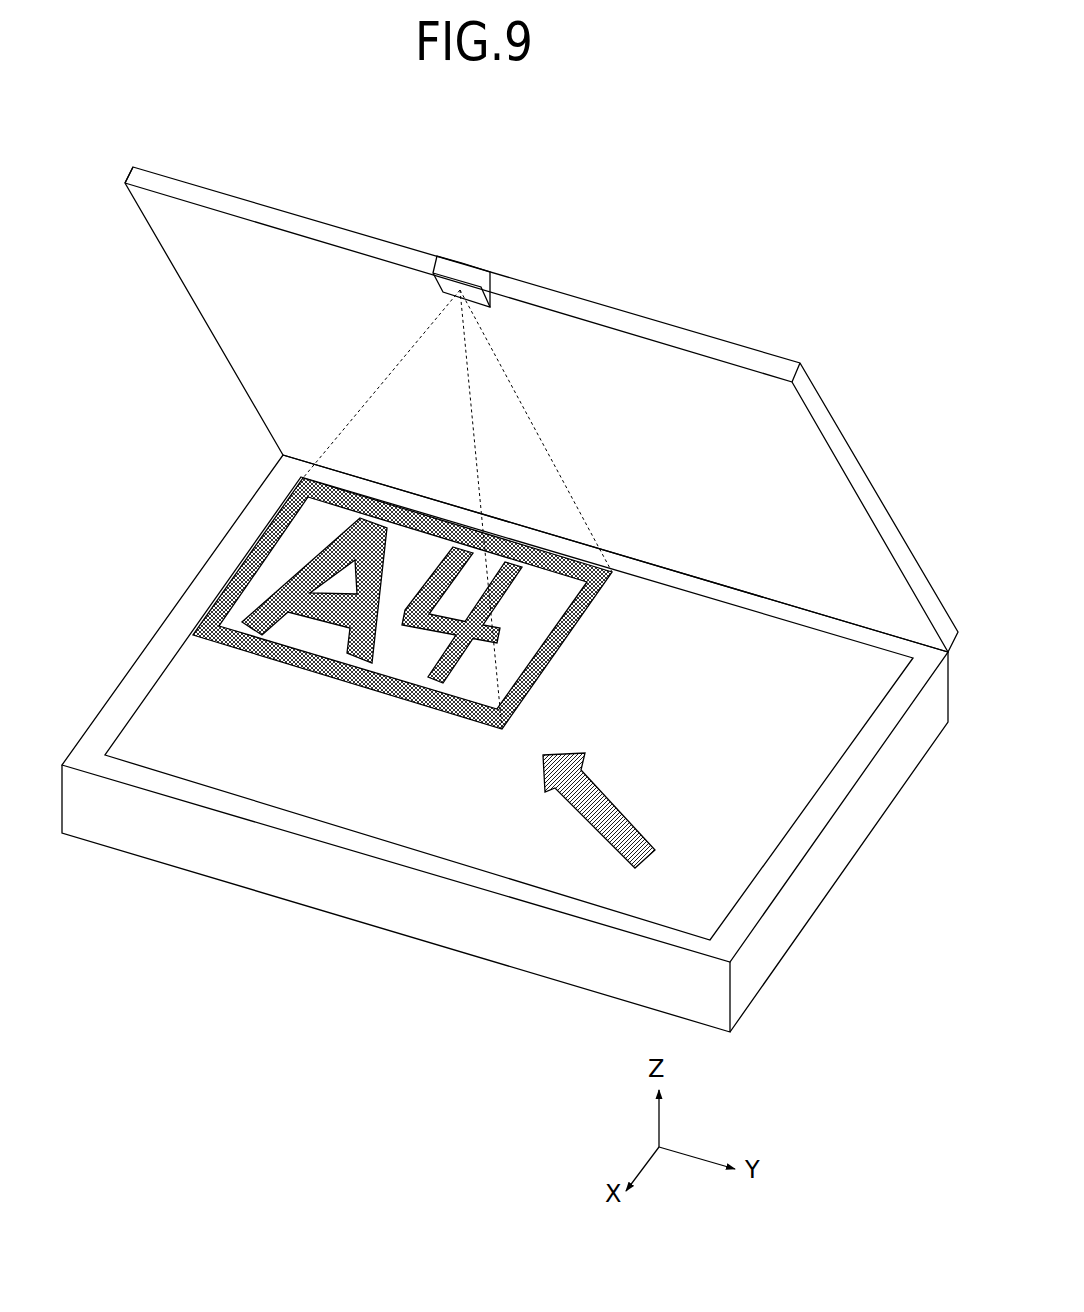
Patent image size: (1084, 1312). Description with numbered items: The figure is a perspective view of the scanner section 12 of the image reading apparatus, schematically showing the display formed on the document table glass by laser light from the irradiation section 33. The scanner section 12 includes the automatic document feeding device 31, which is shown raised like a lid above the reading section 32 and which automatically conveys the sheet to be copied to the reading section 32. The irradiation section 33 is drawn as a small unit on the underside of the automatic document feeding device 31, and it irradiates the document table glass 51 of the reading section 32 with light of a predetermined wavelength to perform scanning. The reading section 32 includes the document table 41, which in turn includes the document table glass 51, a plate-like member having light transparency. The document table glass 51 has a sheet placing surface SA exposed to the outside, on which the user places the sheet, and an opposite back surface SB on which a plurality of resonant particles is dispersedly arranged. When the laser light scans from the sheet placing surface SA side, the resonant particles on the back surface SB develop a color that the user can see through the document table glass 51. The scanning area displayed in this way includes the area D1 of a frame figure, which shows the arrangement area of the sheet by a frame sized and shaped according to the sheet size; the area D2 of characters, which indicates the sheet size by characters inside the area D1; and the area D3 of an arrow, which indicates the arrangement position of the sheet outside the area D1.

The scanner section 12 is at (781, 284).
The automatic document feeding device 31 is at (591, 285).
The irradiation section 33 is at (461, 262).
The reading section 32 is at (59, 801).
The document table 41 is at (185, 610).
The document table glass 51 is at (183, 687).
The sheet placing surface SA is at (160, 723).
The back surface SB is at (715, 903).
The area of a frame figure D1 is at (596, 621).
The area of characters D2 is at (511, 633).
The area of an arrow D3 is at (621, 785).